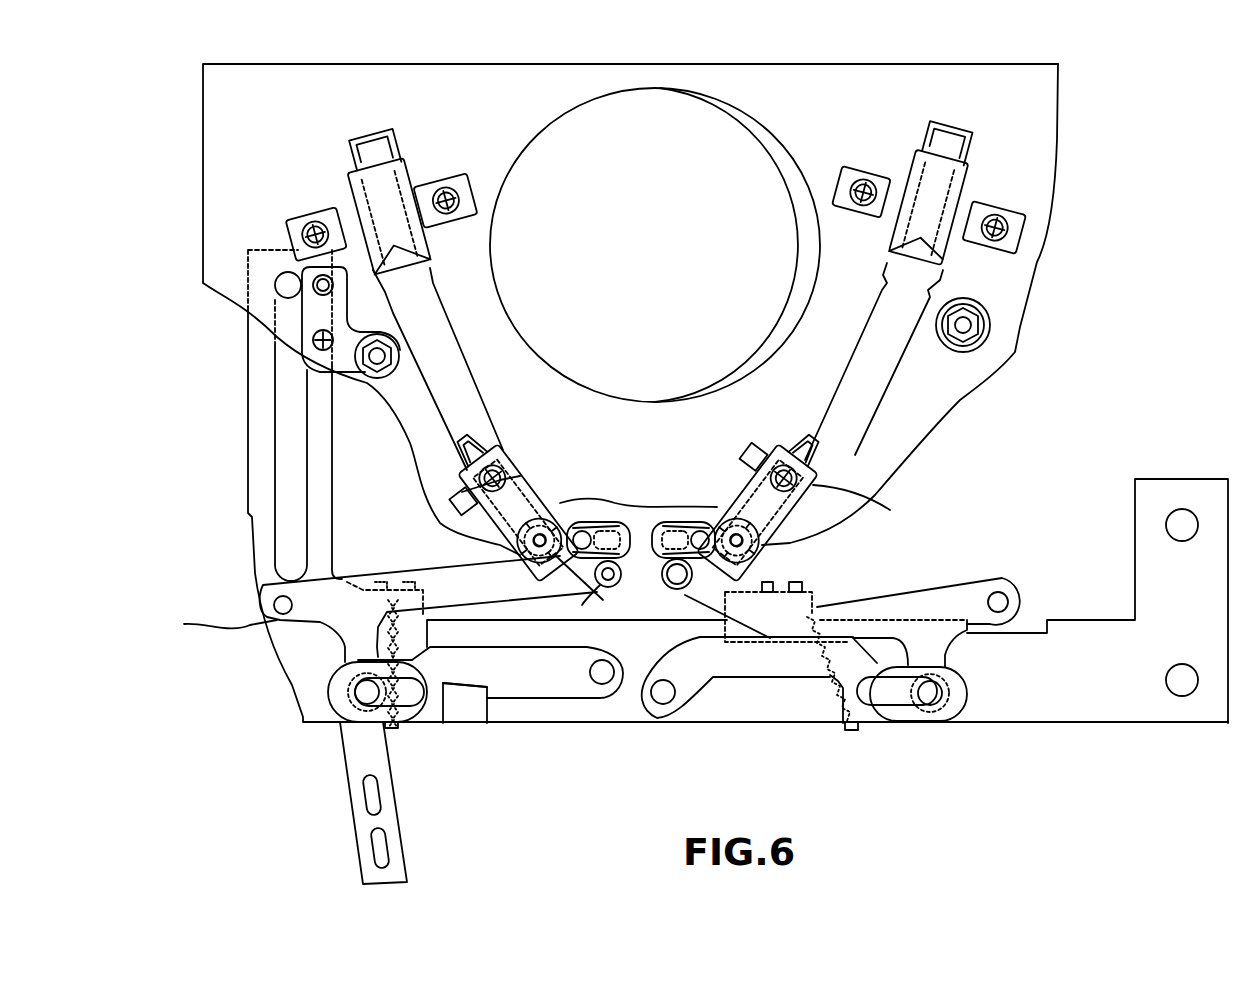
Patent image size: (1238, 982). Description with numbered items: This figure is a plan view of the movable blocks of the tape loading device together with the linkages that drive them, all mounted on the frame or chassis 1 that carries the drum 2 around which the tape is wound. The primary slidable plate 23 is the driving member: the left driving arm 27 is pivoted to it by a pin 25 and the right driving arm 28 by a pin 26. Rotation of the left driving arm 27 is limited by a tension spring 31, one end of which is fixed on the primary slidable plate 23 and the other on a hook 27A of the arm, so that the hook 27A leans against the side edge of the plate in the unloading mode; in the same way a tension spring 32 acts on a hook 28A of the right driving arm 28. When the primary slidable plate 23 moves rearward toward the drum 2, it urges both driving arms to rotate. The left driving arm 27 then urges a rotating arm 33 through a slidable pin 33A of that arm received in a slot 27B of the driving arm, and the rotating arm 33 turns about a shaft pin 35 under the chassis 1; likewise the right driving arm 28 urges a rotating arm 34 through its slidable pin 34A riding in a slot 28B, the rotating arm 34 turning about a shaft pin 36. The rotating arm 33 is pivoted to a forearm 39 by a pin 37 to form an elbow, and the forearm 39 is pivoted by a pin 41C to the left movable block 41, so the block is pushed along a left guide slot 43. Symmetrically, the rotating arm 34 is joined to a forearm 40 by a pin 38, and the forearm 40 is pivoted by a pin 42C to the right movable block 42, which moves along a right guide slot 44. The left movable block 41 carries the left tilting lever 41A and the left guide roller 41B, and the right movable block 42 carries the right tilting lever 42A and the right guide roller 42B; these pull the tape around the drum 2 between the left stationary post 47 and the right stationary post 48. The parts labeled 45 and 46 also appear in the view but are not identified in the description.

The frame or chassis 1 is at (497, 80).
The drum 2 is at (620, 115).
The primary slidable plate 23 is at (1168, 500).
The pin 25 is at (602, 670).
The pin 26 is at (665, 690).
The left driving arm 27 is at (335, 682).
The hook 27A is at (394, 730).
The slot 27B is at (450, 715).
The right driving arm 28 is at (960, 708).
The hook 28A is at (853, 740).
The slot 28B is at (900, 733).
The tension spring 31 is at (388, 607).
The tension spring 32 is at (828, 682).
The rotating arm 33 is at (263, 603).
The slidable pin 33A is at (368, 705).
The rotating arm 34 is at (1005, 588).
The slidable pin 34A is at (938, 690).
The shaft pin 35 is at (217, 621).
The shaft pin 36 is at (1010, 600).
The pin 37 is at (600, 580).
The pin 38 is at (660, 612).
The forearm 39 is at (605, 590).
The forearm 40 is at (680, 595).
The left movable block 41 is at (510, 465).
The left tilting lever 41A is at (615, 530).
The left guide roller 41B is at (566, 510).
The pin 41C is at (505, 480).
The right movable block 42 is at (762, 467).
The right tilting lever 42A is at (700, 525).
The right guide roller 42B is at (820, 546).
The pin 42C is at (870, 497).
The left guide slot 43 is at (455, 400).
The right guide slot 44 is at (815, 412).
The left terminal bracket 45 is at (408, 188).
The right terminal bracket 46 is at (853, 172).
The left stationary post 47 is at (377, 363).
The right stationary post 48 is at (960, 310).